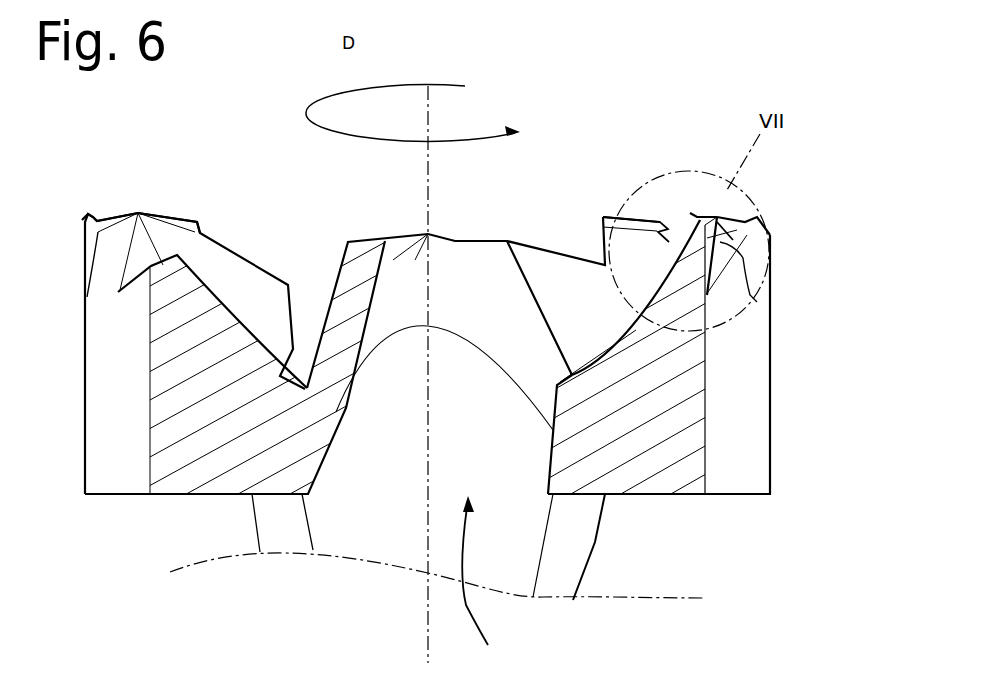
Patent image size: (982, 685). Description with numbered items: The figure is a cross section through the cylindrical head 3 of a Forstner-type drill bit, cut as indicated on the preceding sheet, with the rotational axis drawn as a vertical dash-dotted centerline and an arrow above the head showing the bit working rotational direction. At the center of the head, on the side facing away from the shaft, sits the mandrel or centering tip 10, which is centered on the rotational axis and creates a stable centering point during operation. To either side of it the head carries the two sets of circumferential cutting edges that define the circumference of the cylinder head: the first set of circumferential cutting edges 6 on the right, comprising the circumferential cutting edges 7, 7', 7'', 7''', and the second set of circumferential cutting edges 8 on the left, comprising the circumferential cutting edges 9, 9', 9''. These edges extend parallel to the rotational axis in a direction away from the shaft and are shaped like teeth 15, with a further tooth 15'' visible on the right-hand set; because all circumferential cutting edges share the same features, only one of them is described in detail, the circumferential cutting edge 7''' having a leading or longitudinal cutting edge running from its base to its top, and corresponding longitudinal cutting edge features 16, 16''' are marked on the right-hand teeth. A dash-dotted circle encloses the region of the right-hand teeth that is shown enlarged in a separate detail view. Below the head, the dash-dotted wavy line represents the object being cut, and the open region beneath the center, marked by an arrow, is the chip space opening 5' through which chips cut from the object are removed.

The cylindrical head 3 is at (800, 428).
The chip space opening 5' is at (485, 584).
The first set of circumferential cutting edges 6 is at (800, 262).
The circumferential cutting edge 7 is at (631, 191).
The circumferential cutting edge 7' is at (762, 191).
The circumferential cutting edge 7'' is at (780, 258).
The circumferential cutting edge 7''' is at (698, 216).
The second set of circumferential cutting edges 8 is at (80, 198).
The circumferential cutting edge 9 is at (169, 200).
The circumferential cutting edge 9' is at (62, 240).
The circumferential cutting edge 9'' is at (116, 186).
The mandrel or centering tip 10 is at (450, 228).
The teeth 15 is at (673, 214).
The rake face 15'' is at (782, 203).
The flank face 16 is at (604, 223).
The flank face 16''' is at (801, 278).